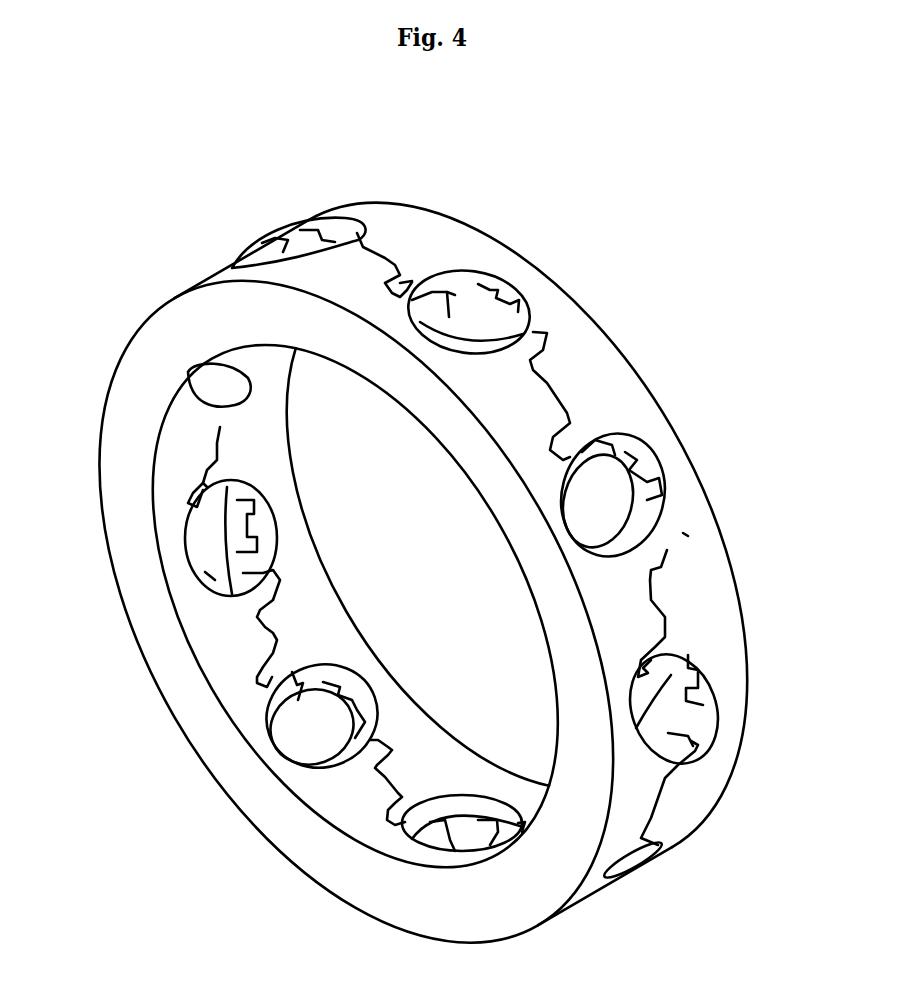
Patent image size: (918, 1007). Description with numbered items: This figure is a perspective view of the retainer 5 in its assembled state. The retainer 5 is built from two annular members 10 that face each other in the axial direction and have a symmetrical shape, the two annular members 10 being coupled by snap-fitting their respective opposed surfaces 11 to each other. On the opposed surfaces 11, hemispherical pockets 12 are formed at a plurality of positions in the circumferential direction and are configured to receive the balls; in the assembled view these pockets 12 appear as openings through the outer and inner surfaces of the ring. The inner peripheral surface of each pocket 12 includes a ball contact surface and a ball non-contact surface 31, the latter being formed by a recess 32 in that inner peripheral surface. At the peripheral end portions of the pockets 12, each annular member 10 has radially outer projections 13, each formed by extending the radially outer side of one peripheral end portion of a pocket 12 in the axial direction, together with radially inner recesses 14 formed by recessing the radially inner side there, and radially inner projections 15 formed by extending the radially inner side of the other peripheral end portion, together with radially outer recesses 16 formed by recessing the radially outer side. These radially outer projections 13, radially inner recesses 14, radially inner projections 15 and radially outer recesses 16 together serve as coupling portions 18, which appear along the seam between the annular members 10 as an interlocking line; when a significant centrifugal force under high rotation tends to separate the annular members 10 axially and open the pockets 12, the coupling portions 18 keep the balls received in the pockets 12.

The retainer 5 is at (429, 578).
The annular member 10 is at (635, 333).
The opposed surface 11 is at (655, 603).
The pocket 12 is at (620, 443).
The radially outer projection 13 is at (412, 281).
The radially inner recess 14 is at (455, 295).
The radially inner projection 15 is at (205, 487).
The radially outer recess 16 is at (217, 592).
The coupling portion 18 is at (685, 532).
The ball non-contact surface 31 is at (510, 293).
The recess 32 is at (548, 540).